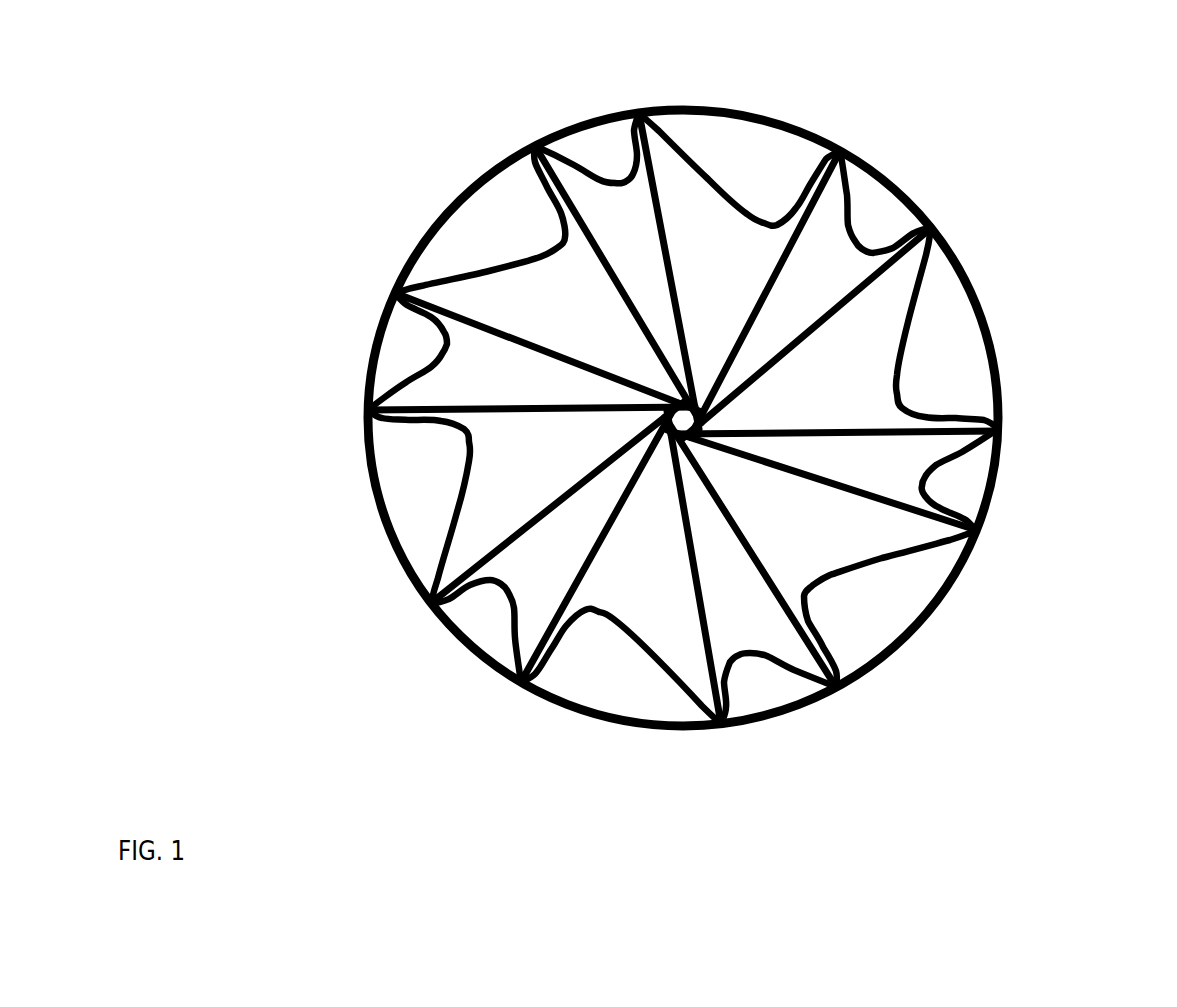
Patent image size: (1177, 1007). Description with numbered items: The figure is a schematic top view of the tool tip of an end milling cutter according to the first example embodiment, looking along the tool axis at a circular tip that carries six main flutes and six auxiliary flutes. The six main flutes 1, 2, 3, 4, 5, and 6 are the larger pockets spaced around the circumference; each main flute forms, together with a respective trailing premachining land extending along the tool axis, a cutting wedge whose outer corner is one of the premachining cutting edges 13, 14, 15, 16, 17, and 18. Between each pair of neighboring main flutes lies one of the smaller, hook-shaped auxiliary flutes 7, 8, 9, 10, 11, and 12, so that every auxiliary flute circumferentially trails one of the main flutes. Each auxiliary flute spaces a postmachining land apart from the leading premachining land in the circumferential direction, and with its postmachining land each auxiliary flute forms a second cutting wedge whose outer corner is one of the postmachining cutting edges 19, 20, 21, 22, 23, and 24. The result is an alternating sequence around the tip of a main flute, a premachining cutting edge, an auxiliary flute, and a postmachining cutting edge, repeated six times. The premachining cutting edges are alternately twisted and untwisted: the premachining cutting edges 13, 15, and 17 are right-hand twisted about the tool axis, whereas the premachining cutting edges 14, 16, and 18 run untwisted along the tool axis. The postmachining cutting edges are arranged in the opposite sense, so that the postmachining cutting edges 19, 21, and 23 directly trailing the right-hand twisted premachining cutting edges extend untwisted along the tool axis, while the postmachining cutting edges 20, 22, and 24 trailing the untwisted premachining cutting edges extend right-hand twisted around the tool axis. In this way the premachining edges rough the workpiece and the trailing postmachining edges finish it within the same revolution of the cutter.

The main flute 1 is at (477, 220).
The main flute 2 is at (404, 478).
The main flute 3 is at (581, 694).
The main flute 4 is at (870, 624).
The main flute 5 is at (955, 375).
The main flute 6 is at (791, 168).
The auxiliary flute 7 is at (593, 148).
The auxiliary flute 8 is at (399, 349).
The auxiliary flute 9 is at (482, 617).
The auxiliary flute 10 is at (756, 693).
The auxiliary flute 11 is at (969, 495).
The auxiliary flute 12 is at (887, 224).
The premachining cutting edge 13 is at (535, 148).
The premachining cutting edge 14 is at (368, 412).
The premachining cutting edge 15 is at (524, 684).
The premachining cutting edge 16 is at (850, 697).
The premachining cutting edge 17 is at (998, 428).
The premachining cutting edge 18 is at (841, 151).
The postmachining cutting edge 19 is at (639, 113).
The postmachining cutting edge 20 is at (395, 294).
The postmachining cutting edge 21 is at (432, 606).
The postmachining cutting edge 22 is at (738, 727).
The postmachining cutting edge 23 is at (975, 529).
The postmachining cutting edge 24 is at (931, 228).